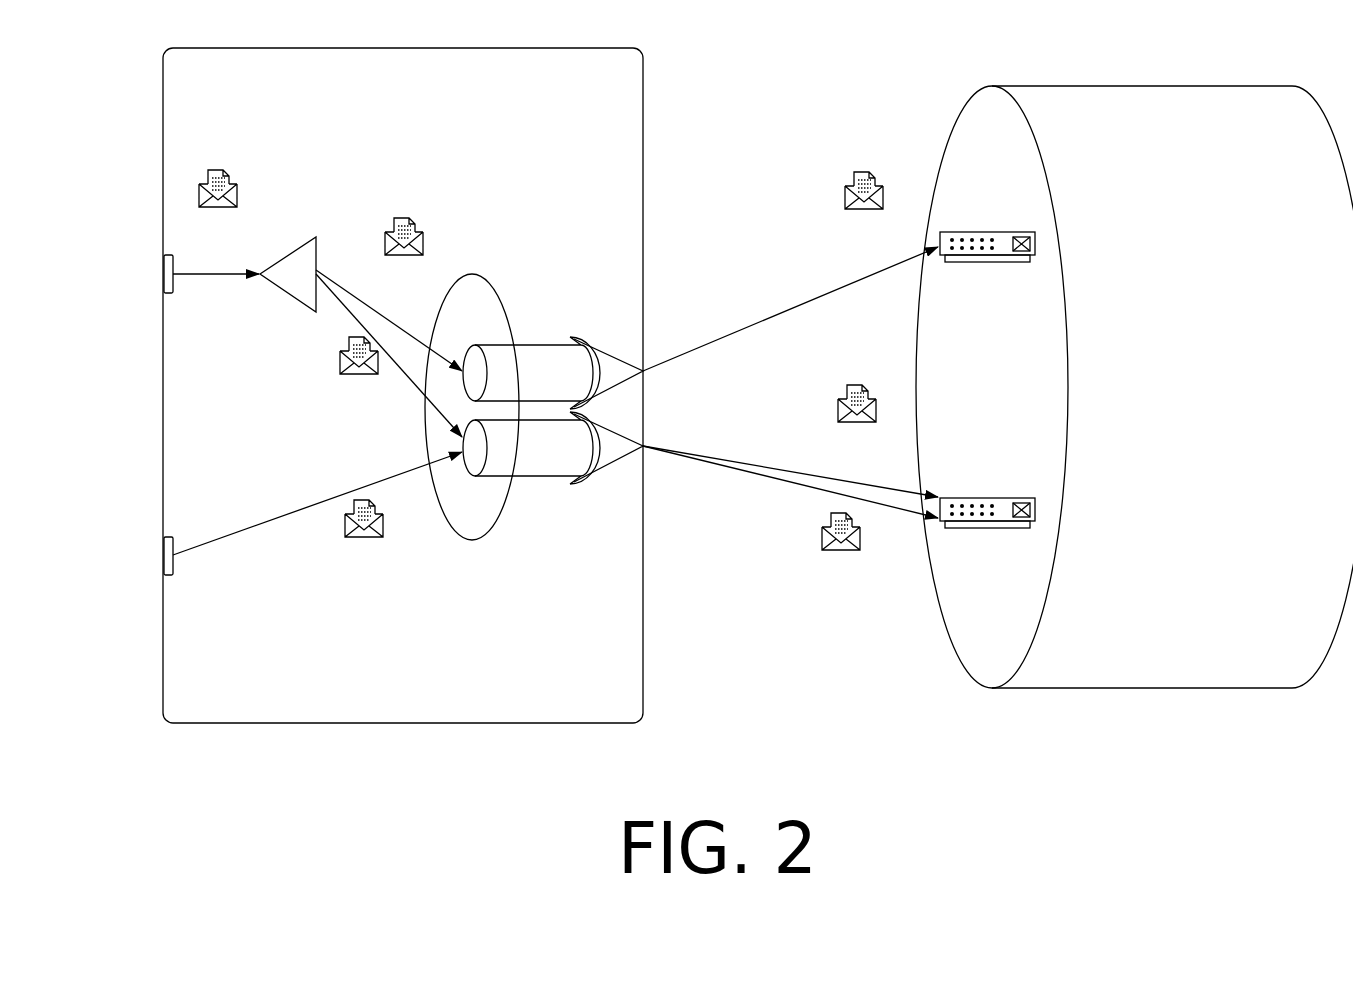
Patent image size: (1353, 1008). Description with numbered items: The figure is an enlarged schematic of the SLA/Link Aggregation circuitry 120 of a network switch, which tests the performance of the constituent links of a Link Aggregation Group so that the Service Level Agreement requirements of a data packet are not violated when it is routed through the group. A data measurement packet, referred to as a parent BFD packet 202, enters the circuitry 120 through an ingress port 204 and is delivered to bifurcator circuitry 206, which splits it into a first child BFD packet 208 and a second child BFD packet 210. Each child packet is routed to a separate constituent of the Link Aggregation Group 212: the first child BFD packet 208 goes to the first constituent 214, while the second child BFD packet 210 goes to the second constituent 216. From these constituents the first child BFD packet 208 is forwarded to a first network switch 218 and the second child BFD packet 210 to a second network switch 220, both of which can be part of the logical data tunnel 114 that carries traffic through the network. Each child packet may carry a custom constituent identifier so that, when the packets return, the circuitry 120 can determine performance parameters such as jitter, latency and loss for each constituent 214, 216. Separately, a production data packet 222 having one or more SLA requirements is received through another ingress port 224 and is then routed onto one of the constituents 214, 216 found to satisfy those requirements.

The logical data tunnel 114 is at (1197, 399).
The SLA/Link Aggregation circuitry 120 is at (413, 692).
The parent BFD packet 202 is at (234, 172).
The ingress port 204 is at (164, 258).
The bifurcator circuitry 206 is at (287, 296).
The first child BFD packet 208 is at (418, 220).
The second child BFD packet 210 is at (341, 363).
The Link Aggregation Group 212 is at (474, 538).
The first constituent 214 is at (533, 344).
The second constituent 216 is at (530, 481).
The first network switch 218 is at (1000, 232).
The second network switch 220 is at (1006, 498).
The data packet 222 is at (347, 530).
The ingress port 224 is at (164, 546).